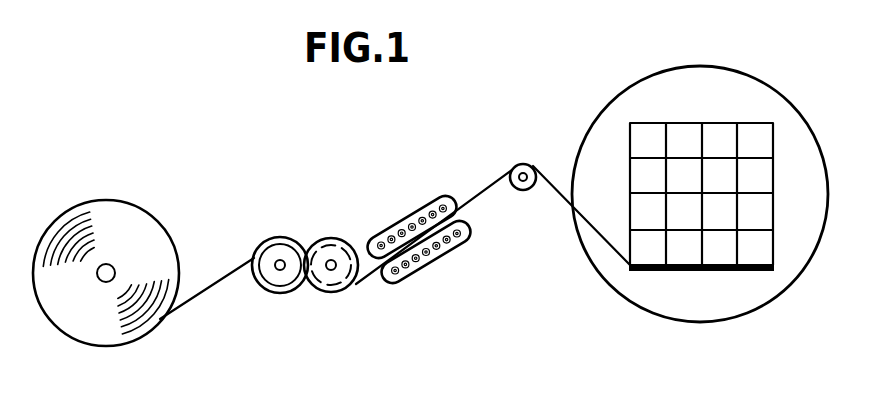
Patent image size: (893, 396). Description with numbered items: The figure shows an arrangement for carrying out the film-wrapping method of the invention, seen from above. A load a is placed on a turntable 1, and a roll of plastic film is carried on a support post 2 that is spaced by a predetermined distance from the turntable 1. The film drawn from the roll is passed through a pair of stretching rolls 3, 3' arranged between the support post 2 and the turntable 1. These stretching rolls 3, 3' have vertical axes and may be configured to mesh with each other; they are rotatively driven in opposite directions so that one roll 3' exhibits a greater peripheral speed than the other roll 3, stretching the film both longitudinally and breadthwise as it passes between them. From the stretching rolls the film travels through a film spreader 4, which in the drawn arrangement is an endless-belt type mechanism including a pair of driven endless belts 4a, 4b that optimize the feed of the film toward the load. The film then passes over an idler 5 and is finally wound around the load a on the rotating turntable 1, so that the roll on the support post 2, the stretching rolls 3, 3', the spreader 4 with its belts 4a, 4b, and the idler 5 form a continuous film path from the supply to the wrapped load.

The turntable 1 is at (700, 179).
The load a is at (722, 257).
The support post 2 is at (107, 263).
The stretching roll 3 is at (277, 232).
The stretching roll 3' is at (331, 296).
The film spreader 4 is at (419, 243).
The driven endless belt 4a is at (390, 228).
The driven endless belt 4b is at (418, 268).
The idler 5 is at (523, 191).